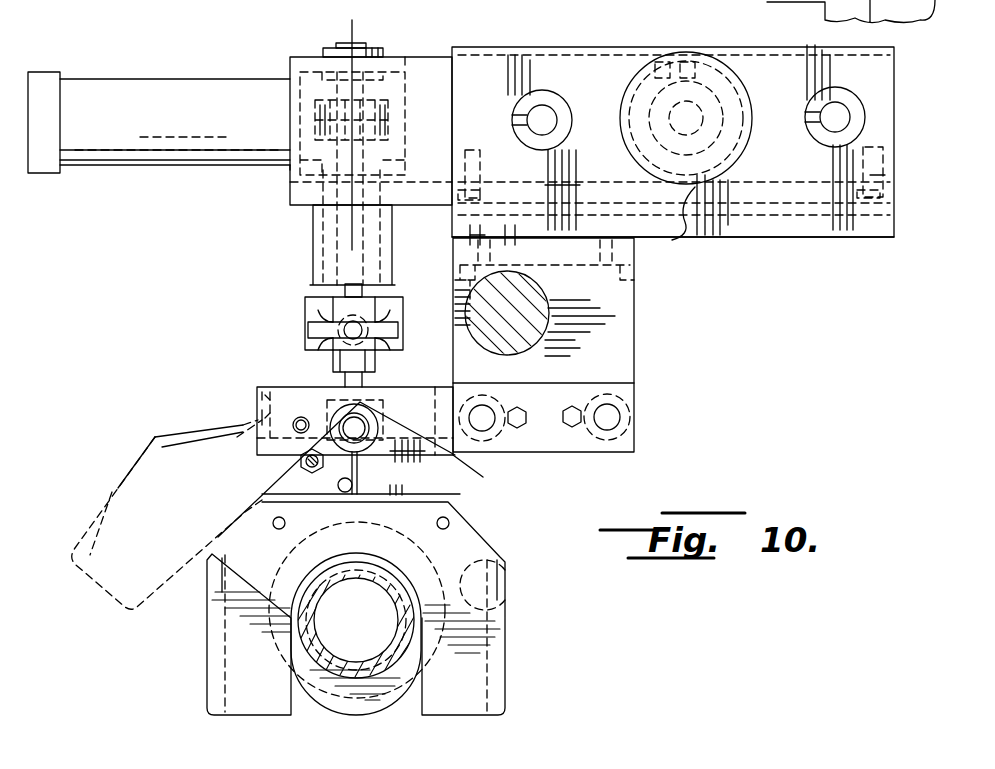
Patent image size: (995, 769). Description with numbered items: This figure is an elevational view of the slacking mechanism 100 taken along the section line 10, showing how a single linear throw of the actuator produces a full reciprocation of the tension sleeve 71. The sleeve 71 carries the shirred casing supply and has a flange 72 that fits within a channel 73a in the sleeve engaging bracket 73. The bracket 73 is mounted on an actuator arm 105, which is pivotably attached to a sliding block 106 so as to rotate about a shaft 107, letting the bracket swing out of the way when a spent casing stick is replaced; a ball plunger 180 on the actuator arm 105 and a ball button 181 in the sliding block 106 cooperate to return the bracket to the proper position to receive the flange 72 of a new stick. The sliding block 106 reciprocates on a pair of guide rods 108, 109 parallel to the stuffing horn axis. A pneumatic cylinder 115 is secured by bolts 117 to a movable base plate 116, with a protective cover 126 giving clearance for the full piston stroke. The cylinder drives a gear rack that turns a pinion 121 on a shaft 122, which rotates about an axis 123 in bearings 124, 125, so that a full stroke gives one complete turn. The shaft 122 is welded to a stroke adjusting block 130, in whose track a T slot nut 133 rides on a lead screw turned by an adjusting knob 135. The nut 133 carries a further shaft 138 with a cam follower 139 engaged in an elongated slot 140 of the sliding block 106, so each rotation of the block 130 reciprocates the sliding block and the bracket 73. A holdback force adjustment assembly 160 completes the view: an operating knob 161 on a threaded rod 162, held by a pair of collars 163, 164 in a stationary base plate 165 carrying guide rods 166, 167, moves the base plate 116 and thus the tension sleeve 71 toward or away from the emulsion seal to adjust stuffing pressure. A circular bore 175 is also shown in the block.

The section line 10 is at (647, 13).
The tension sleeve 71 is at (312, 645).
The flange 72 is at (305, 700).
The sleeve engaging bracket 73 is at (118, 485).
The channel 73a is at (492, 535).
The slacking mechanism 100 is at (237, 360).
The actuator arm 105 is at (483, 477).
The sliding block 106 is at (255, 404).
The shaft 107 is at (360, 432).
The guide rod 108 is at (482, 418).
The guide rod 109 is at (612, 415).
The pneumatic cylinder 115 is at (415, 60).
The base plate 116 is at (290, 186).
The bolts 117 is at (490, 145).
The pinion 121 is at (300, 110).
The shaft 122 is at (358, 45).
The axis 123 is at (345, 48).
The bearing 124 is at (330, 50).
The bearing 125 is at (313, 228).
The protective cover 126 is at (155, 170).
The stroke adjusting block 130 is at (305, 320).
The T slot nut 133 is at (335, 358).
The adjusting knob 135 is at (343, 300).
The shaft 138 is at (377, 380).
The cam follower 139 is at (380, 412).
The elongated slot 140 is at (257, 386).
The holdback force adjustment assembly 160 is at (770, 245).
The operating knob 161 is at (672, 240).
The threaded rod 162 is at (697, 103).
The collar 163 is at (650, 52).
The collar 164 is at (686, 118).
The stationary base plate 165 is at (838, 230).
The guide rod 166 is at (548, 112).
The guide rod 167 is at (826, 134).
The shaft bore 175 is at (545, 308).
The ball plunger 180 is at (300, 462).
The ball button 181 is at (293, 430).